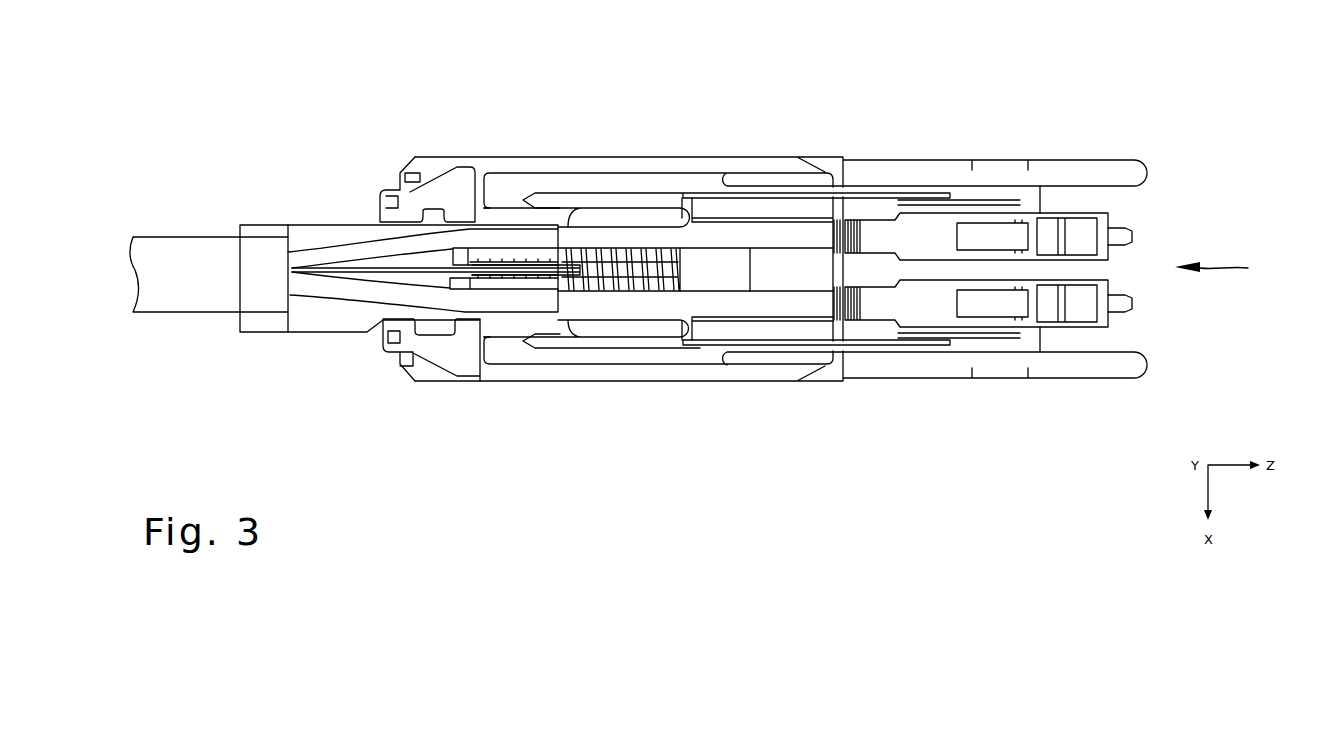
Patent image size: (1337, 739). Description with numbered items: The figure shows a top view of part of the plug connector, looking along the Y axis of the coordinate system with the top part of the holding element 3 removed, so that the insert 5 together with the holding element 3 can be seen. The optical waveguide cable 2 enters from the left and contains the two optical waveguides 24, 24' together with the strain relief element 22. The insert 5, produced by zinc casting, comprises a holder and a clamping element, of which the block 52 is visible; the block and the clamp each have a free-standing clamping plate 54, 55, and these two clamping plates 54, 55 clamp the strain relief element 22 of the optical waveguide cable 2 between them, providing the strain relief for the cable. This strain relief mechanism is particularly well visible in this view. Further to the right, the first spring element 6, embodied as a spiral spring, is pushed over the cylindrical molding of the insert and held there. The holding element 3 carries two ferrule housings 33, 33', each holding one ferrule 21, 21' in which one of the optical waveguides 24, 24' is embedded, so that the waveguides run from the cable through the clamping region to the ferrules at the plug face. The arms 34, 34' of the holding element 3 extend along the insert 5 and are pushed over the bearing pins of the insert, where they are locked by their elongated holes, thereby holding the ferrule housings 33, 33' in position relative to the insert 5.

The optical waveguide cable 2 is at (202, 262).
The holding element 3 is at (1223, 274).
The insert 5 is at (822, 128).
The first spring element 6 is at (650, 292).
The ferrule 21 is at (1177, 340).
The ferrule 21' is at (1172, 186).
The strain relief element 22 is at (440, 270).
The optical waveguide 24 is at (423, 357).
The optical waveguide 24' is at (423, 166).
The ferrule housing 33 is at (981, 365).
The ferrule housing 33' is at (983, 180).
The arm 34 is at (700, 328).
The arm 34' is at (700, 155).
The block 52 is at (275, 290).
The clamping plate 54 is at (510, 280).
The clamping plate 55 is at (503, 247).